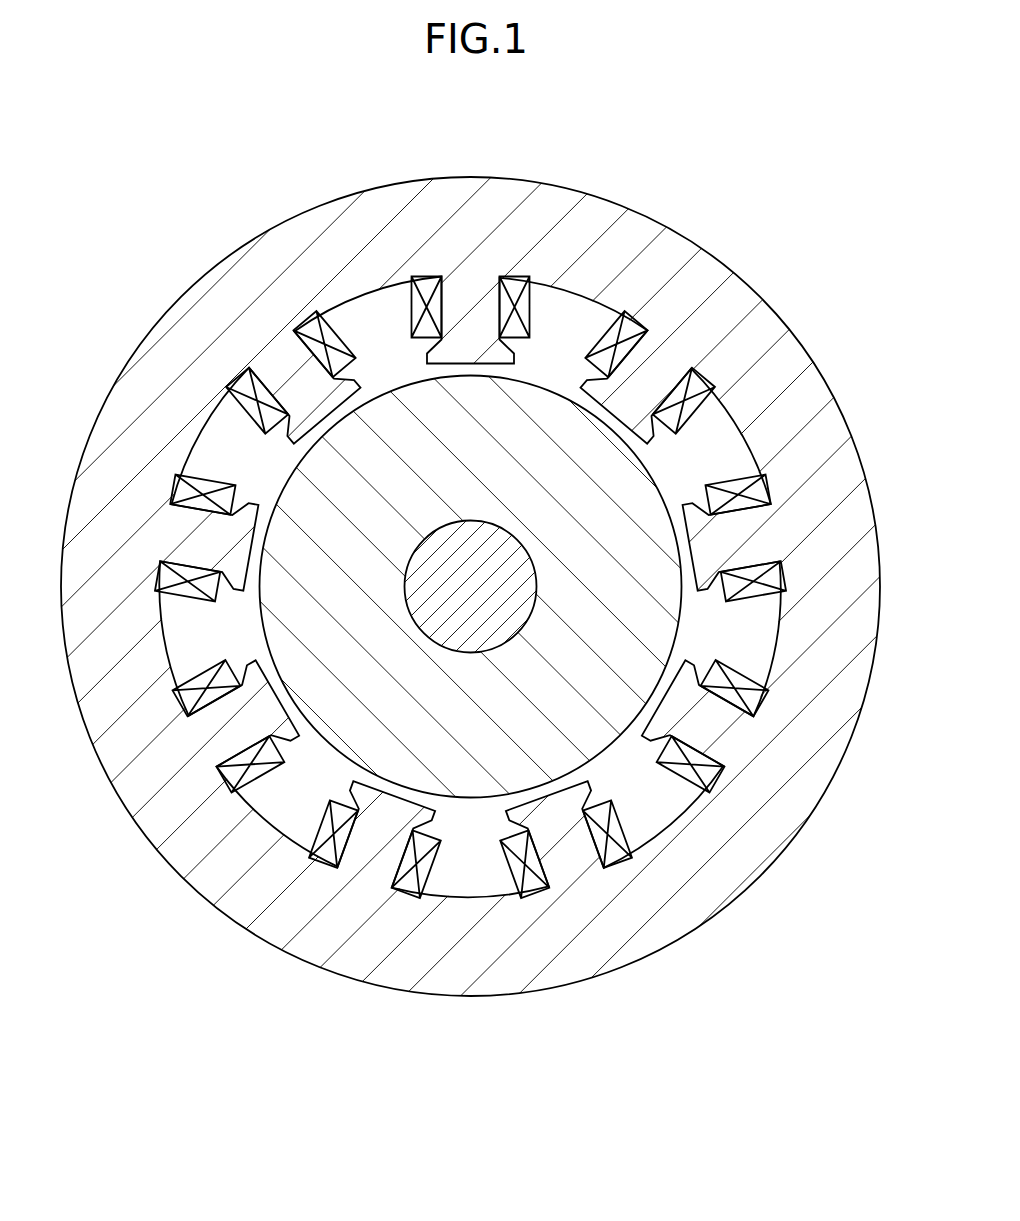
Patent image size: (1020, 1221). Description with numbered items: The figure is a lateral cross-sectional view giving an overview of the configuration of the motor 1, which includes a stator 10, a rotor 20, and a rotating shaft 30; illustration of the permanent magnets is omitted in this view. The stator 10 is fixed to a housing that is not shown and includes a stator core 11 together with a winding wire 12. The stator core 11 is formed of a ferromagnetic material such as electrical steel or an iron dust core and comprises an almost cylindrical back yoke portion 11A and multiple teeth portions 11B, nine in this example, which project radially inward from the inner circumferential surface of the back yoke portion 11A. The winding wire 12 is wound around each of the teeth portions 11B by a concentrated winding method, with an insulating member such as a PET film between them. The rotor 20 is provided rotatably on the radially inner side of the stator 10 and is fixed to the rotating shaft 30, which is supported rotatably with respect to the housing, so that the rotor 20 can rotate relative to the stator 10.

The motor 1 is at (62, 140).
The stator 10 is at (703, 236).
The stator core 11 is at (790, 330).
The back yoke portion 11A is at (784, 408).
The teeth portions 11B is at (480, 287).
The winding wire 12 is at (412, 322).
The rotor 20 is at (333, 420).
The rotating shaft 30 is at (467, 653).